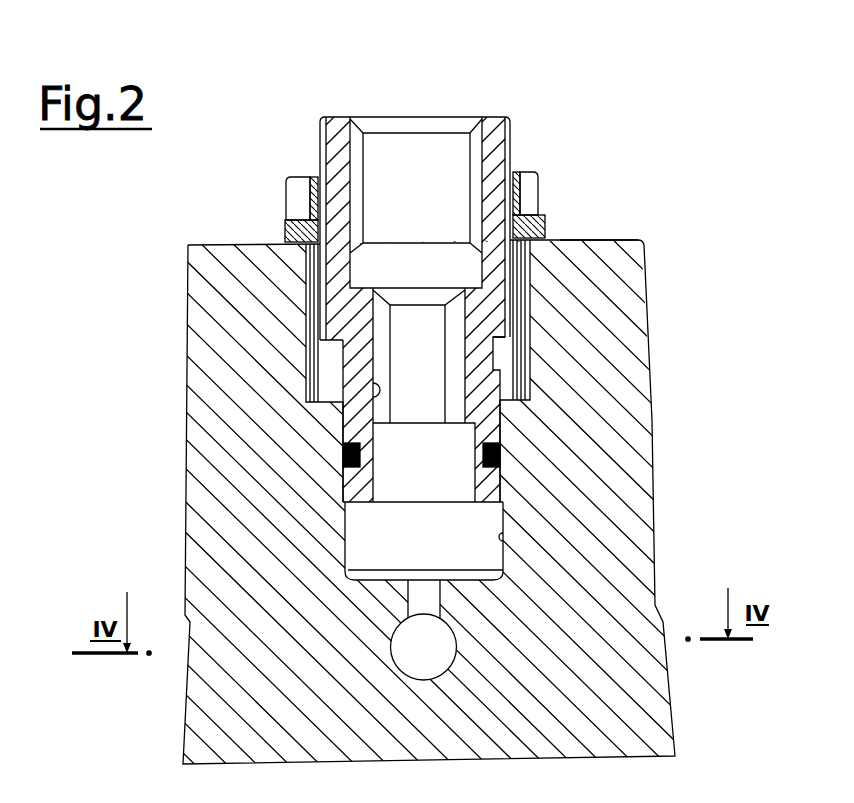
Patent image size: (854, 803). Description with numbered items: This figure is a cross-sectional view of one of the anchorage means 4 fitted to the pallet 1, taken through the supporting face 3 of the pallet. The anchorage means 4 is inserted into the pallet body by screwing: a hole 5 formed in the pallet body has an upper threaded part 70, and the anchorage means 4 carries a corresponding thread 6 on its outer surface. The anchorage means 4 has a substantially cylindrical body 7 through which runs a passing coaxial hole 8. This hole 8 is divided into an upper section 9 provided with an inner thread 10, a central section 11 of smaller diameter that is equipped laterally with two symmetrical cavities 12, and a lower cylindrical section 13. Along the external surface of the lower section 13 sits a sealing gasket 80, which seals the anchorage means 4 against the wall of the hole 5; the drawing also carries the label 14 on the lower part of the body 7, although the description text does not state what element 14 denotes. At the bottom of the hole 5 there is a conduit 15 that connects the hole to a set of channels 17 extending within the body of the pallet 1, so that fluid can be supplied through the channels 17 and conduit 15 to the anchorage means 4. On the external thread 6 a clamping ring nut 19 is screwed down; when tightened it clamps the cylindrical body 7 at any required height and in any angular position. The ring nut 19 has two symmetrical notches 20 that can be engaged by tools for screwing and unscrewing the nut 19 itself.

The pallet 1 is at (667, 535).
The supporting face 3 is at (598, 247).
The anchorage means 4 is at (521, 138).
The hole 5 is at (505, 536).
The thread 6 is at (320, 143).
The cylindrical body 7 is at (345, 301).
The passing coaxial hole 8 is at (393, 105).
The upper section 9 is at (428, 155).
The inner thread 10 is at (471, 140).
The central section 11 is at (433, 405).
The symmetrical cavities 12 is at (383, 357).
The lower cylindrical section 13 is at (390, 481).
The sleeve lower portion 14 is at (343, 412).
The conduit 15 is at (432, 596).
The channels 17 is at (445, 640).
The clamping ring nut 19 is at (278, 232).
The symmetrical notches 20 is at (303, 200).
The upper threaded part 70 is at (571, 250).
The sealing gasket 80 is at (500, 450).